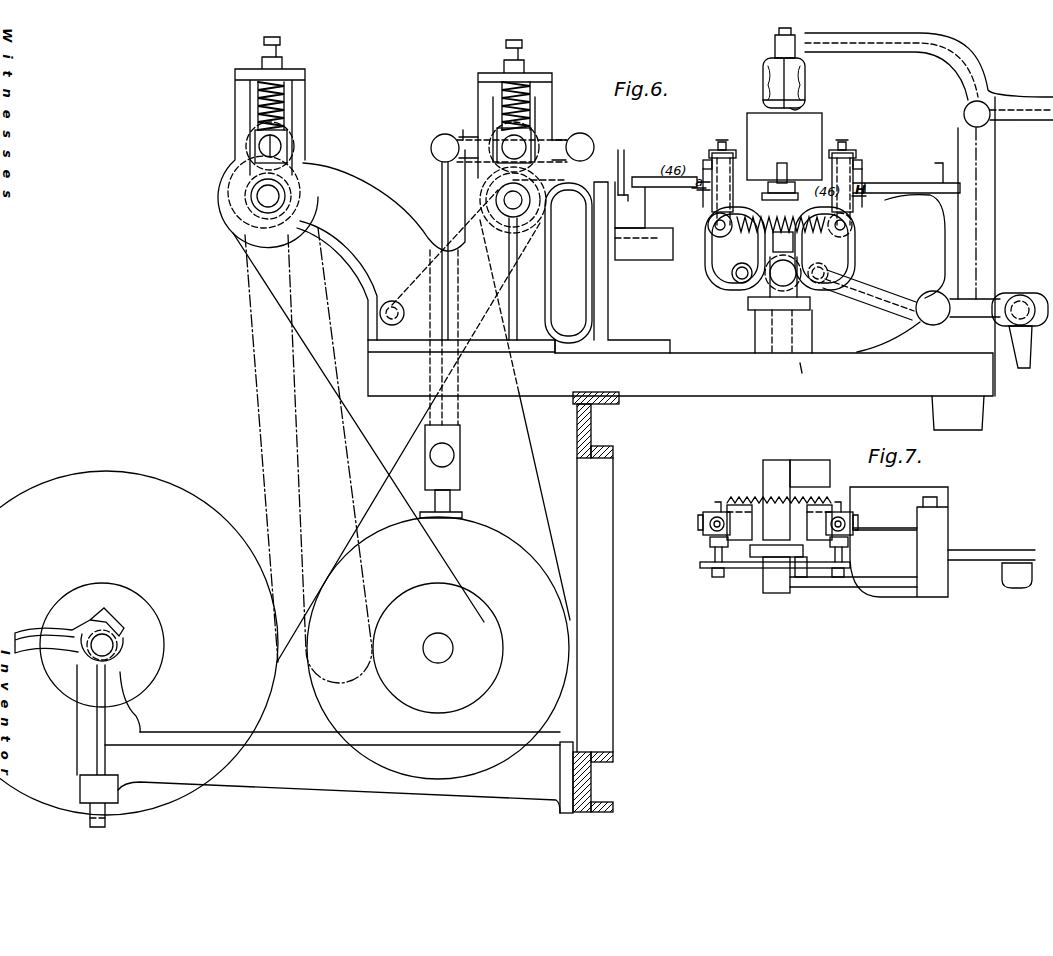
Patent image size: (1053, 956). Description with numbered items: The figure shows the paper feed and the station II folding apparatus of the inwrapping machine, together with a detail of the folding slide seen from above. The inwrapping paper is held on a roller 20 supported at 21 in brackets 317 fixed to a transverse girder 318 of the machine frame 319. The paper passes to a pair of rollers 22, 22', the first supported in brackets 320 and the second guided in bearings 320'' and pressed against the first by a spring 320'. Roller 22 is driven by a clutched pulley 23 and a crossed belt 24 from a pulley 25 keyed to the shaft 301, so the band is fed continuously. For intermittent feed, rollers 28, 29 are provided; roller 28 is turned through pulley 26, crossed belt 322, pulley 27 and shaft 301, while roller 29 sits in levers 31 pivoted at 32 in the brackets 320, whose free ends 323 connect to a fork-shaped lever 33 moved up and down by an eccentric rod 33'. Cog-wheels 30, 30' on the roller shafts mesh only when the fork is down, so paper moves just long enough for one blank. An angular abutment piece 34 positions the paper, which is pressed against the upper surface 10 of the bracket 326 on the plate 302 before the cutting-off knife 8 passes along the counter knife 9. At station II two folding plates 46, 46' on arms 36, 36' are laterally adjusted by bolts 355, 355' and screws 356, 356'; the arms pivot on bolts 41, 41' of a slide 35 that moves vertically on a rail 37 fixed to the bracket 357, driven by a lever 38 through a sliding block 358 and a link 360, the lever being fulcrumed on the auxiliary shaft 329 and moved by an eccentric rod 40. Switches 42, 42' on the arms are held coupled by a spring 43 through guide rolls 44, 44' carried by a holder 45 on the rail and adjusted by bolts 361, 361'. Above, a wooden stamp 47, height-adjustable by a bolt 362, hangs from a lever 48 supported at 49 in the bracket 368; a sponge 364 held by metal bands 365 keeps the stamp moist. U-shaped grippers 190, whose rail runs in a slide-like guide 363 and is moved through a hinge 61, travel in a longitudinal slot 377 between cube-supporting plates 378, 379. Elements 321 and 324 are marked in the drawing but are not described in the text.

In FIG. 6, the cutting-off knife 8 is at (625, 152).
In FIG. 6, the counter knife 9 is at (622, 197).
In FIG. 6, the upper surface of bracket 10 is at (596, 183).
In FIG. 6, the roller 20 is at (172, 497).
In FIG. 6, the support 21 is at (120, 640).
In FIG. 6, the roller 22 is at (238, 196).
In FIG. 6, the roller 22' is at (299, 141).
In FIG. 6, the pulley 23 is at (245, 224).
In FIG. 6, the crossed belt 24 is at (348, 432).
In FIG. 6, the pulley 25 is at (507, 640).
In FIG. 6, the pulley 26 is at (545, 225).
In FIG. 6, the pulley 27 is at (496, 540).
In FIG. 6, the roller 28 is at (545, 203).
In FIG. 6, the roller 29 is at (500, 118).
In FIG. 6, the cog-wheel 30 is at (507, 214).
In FIG. 6, the cog-wheel 30' is at (515, 110).
In FIG. 6, the levers 31 is at (463, 127).
In FIG. 6, the support 32 is at (582, 140).
In FIG. 6, the fork-shaped lever 33 is at (428, 293).
In FIG. 6, the eccentric rod 33' is at (451, 471).
In FIG. 6, the angular abutment piece 34 is at (942, 163).
In FIG. 6, the slide 35 is at (812, 308).
In FIG. 7, the slide 35 is at (806, 580).
In FIG. 6, the arm 36 is at (720, 248).
In FIG. 7, the arm 36 is at (712, 510).
In FIG. 6, the arm 36' is at (834, 248).
In FIG. 7, the arm 36' is at (854, 514).
In FIG. 6, the rail 37 is at (848, 215).
In FIG. 7, the rail 37 is at (778, 545).
In FIG. 6, the lever 38 is at (892, 293).
In FIG. 7, the lever 38 is at (866, 590).
In FIG. 6, the eccentric rod 40 is at (1022, 298).
In FIG. 7, the eccentric rod 40 is at (1020, 586).
In FIG. 6, the bolt 41 is at (723, 281).
In FIG. 7, the bolt 41 is at (739, 508).
In FIG. 6, the bolt 41' is at (845, 271).
In FIG. 7, the bolt 41' is at (833, 504).
In FIG. 6, the switch 42 is at (695, 192).
In FIG. 7, the switch 42 is at (700, 545).
In FIG. 6, the switch 42' is at (863, 186).
In FIG. 7, the switch 42' is at (854, 546).
In FIG. 6, the spring 43 is at (737, 218).
In FIG. 7, the spring 43 is at (775, 502).
In FIG. 6, the guide roll 44 is at (696, 250).
In FIG. 7, the guide roll 44 is at (751, 557).
In FIG. 6, the guide roll 44' is at (878, 232).
In FIG. 7, the guide roll 44' is at (864, 563).
In FIG. 6, the holder 45 is at (781, 234).
In FIG. 7, the holder 45 is at (745, 566).
In FIG. 6, the folding plate 46 is at (772, 137).
In FIG. 6, the folding plate 46' is at (837, 119).
In FIG. 6, the wooden stamp 47 is at (795, 110).
In FIG. 6, the lever 48 is at (908, 52).
In FIG. 6, the support 49 is at (963, 114).
In FIG. 6, the hinge 61 is at (800, 195).
In FIG. 6, the U-shaped grippers 190 is at (788, 145).
In FIG. 6, the shaft 301 is at (440, 665).
In FIG. 6, the machine table 302 is at (680, 385).
In FIG. 6, the brackets 317 is at (283, 740).
In FIG. 6, the transverse girder 318 is at (603, 752).
In FIG. 6, the machine frame 319 is at (612, 490).
In FIG. 6, the brackets 320 is at (286, 142).
In FIG. 6, the spring 320' is at (304, 106).
In FIG. 6, the bearings 320'' is at (237, 146).
In FIG. 6, the web path 321 is at (297, 402).
In FIG. 6, the crossed belt 322 is at (532, 444).
In FIG. 6, the free ends 323 is at (438, 142).
In FIG. 6, the plate 324 is at (648, 176).
In FIG. 6, the bracket 326 is at (588, 280).
In FIG. 6, the auxiliary shaft 329 is at (932, 326).
In FIG. 7, the auxiliary shaft 329 is at (938, 503).
In FIG. 6, the bolt 355 is at (717, 169).
In FIG. 7, the bolt 355 is at (680, 522).
In FIG. 6, the bolt 355' is at (848, 177).
In FIG. 7, the bolt 355' is at (885, 522).
In FIG. 6, the screw 356 is at (703, 141).
In FIG. 6, the screw 356' is at (861, 149).
In FIG. 6, the bracket 357 is at (815, 373).
In FIG. 6, the sliding block 358 is at (760, 318).
In FIG. 6, the link 360 is at (768, 285).
In FIG. 7, the link 360 is at (782, 590).
In FIG. 6, the bolt 361 is at (644, 244).
In FIG. 7, the bolt 361 is at (711, 585).
In FIG. 6, the bolt 361' is at (883, 213).
In FIG. 7, the bolt 361' is at (839, 594).
In FIG. 6, the bolt 362 is at (806, 83).
In FIG. 6, the slide-like guide 363 is at (806, 98).
In FIG. 6, the sponge 364 is at (806, 70).
In FIG. 6, the metal bands 365 is at (762, 76).
In FIG. 6, the bracket 368 is at (996, 240).
In FIG. 6, the longitudinal slot 377 is at (760, 200).
In FIG. 6, the plate 378 is at (780, 150).
In FIG. 6, the plate 379 is at (789, 152).